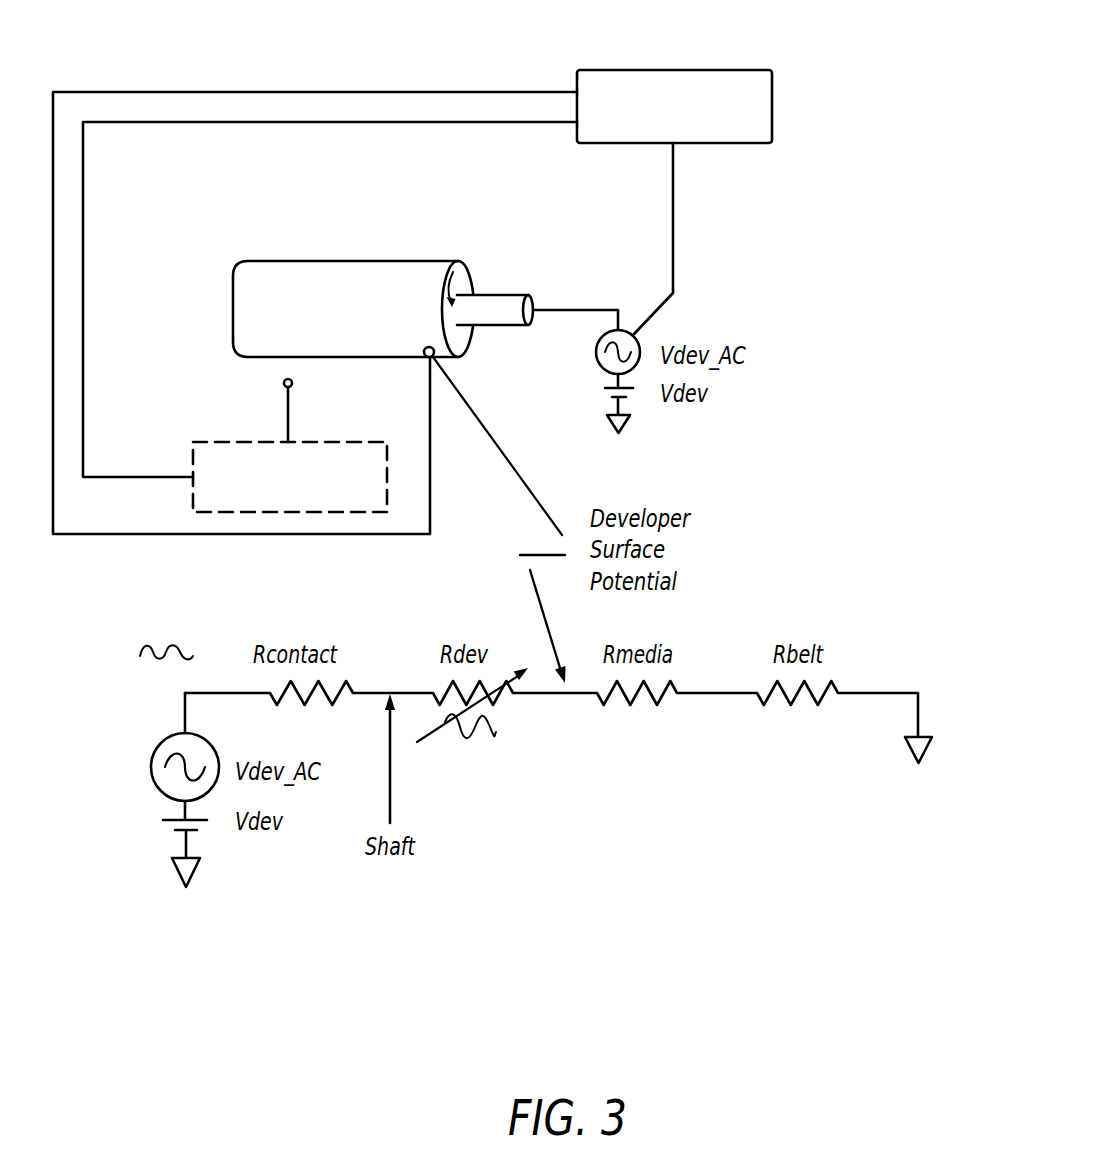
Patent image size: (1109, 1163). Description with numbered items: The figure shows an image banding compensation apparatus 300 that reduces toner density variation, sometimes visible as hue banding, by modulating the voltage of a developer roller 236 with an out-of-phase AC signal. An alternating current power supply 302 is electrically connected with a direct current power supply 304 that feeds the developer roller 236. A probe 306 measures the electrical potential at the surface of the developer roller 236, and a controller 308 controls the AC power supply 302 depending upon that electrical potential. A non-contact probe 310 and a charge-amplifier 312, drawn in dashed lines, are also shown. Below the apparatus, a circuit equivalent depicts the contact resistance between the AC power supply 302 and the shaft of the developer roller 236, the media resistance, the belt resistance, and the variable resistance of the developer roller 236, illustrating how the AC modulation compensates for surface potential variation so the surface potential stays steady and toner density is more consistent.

The developer roller 236 is at (355, 261).
The image banding compensation apparatus 300 is at (714, 299).
The AC power supply 302 is at (597, 351).
The DC power supply 304 is at (608, 388).
The probe 306 is at (423, 352).
The controller 308 is at (707, 70).
The non-contact probe 310 is at (283, 388).
The charge-amplifier 312 is at (193, 458).